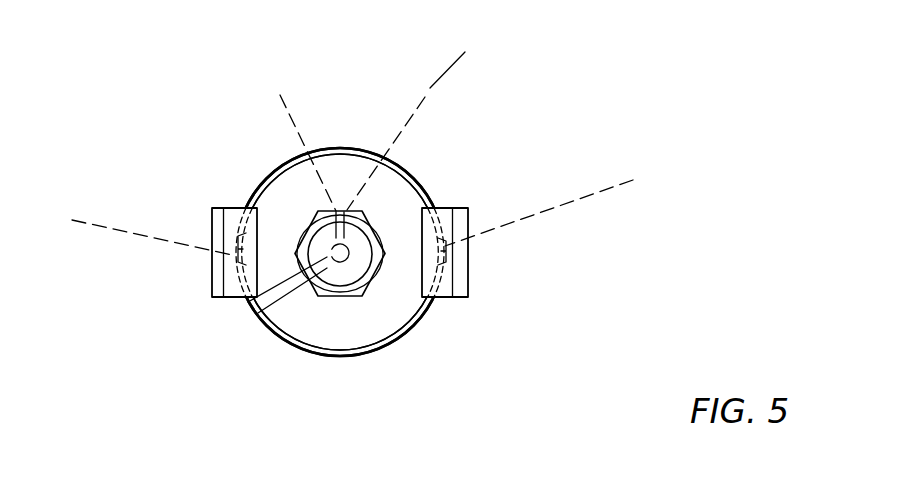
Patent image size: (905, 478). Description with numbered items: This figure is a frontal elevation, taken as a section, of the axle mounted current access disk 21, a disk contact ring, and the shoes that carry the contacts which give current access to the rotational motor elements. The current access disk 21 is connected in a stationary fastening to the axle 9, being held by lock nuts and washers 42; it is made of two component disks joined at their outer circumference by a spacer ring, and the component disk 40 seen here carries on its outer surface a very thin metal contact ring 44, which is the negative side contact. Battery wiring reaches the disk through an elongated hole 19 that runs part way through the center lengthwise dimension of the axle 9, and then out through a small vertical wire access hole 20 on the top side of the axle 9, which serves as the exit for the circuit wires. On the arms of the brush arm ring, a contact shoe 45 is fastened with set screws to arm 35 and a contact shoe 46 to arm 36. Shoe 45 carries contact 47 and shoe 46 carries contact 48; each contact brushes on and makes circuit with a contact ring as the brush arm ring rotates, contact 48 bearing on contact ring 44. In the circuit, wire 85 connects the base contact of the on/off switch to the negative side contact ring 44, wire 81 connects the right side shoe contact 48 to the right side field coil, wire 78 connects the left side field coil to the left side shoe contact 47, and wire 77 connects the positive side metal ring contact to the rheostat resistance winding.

The axle 9 is at (327, 270).
The elongated hole 19 is at (268, 313).
The vertical wire access hole 20 is at (248, 302).
The current access disk 21 is at (442, 157).
The arm 35 is at (470, 210).
The arm 36 is at (212, 208).
The component disk 40 is at (343, 340).
The lock nuts and washers 42 is at (352, 297).
The contact ring 44 is at (308, 350).
The contact shoe 45 is at (460, 263).
The contact shoe 46 is at (220, 274).
The contact 47 is at (468, 281).
The contact 48 is at (244, 244).
The wire 77 is at (437, 72).
The wire 78 is at (640, 178).
The wire 81 is at (84, 220).
The wire 85 is at (289, 99).